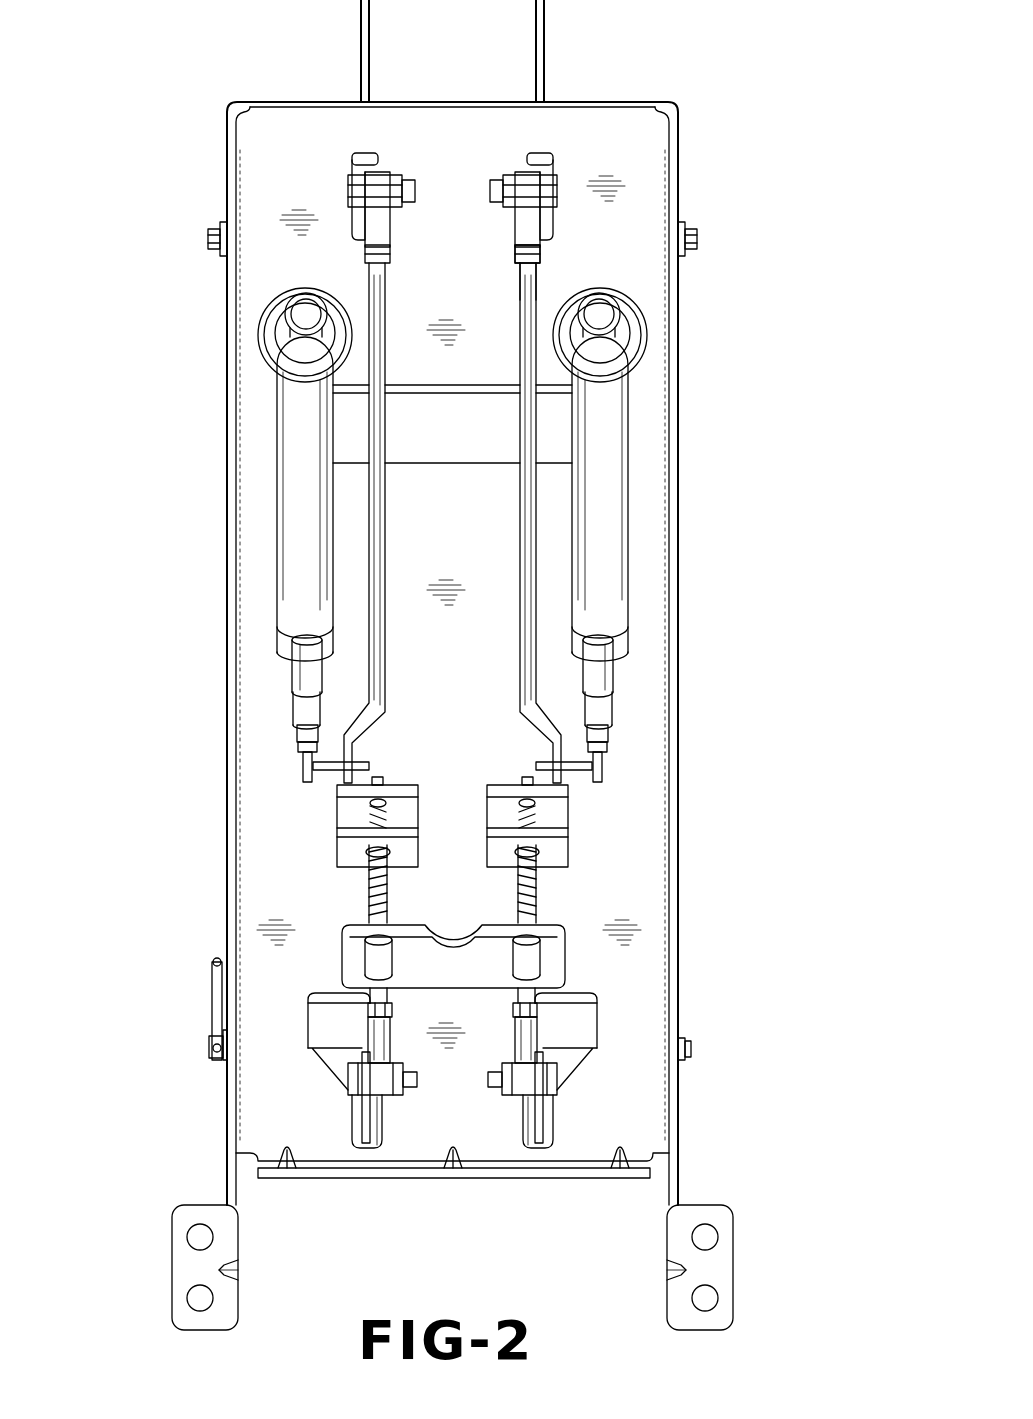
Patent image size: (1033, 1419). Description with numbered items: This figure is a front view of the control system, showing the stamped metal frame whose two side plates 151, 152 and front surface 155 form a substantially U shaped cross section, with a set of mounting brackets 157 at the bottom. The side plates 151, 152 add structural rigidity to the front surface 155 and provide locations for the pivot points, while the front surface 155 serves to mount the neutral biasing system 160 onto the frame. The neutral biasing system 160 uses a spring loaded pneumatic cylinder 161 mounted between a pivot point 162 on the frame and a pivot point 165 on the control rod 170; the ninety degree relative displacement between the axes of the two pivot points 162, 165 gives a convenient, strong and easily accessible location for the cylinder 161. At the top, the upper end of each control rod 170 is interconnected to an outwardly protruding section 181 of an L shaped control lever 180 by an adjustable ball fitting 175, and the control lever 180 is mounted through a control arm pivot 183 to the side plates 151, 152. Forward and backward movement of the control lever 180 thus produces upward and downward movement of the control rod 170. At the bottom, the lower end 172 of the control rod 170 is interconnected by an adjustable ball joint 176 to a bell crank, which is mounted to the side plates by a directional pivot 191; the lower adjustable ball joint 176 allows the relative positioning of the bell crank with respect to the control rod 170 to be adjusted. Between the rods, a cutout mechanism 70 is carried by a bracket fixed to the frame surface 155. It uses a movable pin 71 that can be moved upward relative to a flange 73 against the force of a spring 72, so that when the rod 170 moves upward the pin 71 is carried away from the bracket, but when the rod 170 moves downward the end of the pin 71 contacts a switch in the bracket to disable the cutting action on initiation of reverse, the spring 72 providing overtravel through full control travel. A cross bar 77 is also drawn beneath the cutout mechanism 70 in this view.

The neutral biasing system 160 is at (714, 605).
The side plate 151 is at (235, 641).
The side plate 152 is at (672, 690).
The control lever 180 is at (538, 33).
The outwardly protruding section 181 is at (533, 186).
The control arm pivot 183 is at (206, 243).
The adjustable ball fitting 175 is at (533, 233).
The control rod 170 is at (525, 520).
The pivot point 162 is at (597, 310).
The spring loaded pneumatic cylinder 161 is at (601, 567).
The front surface 155 is at (264, 780).
The pivot point 165 is at (597, 769).
The movable pin 71 is at (372, 882).
The spring 72 is at (376, 906).
The flange 73 is at (557, 831).
The cutout mechanism 70 is at (530, 892).
The cross bar 77 is at (556, 962).
The lower end 172 is at (377, 993).
The adjustable ball joint 176 is at (528, 1042).
The directional pivot 191 is at (212, 1042).
The mounting bracket 157 is at (710, 1272).